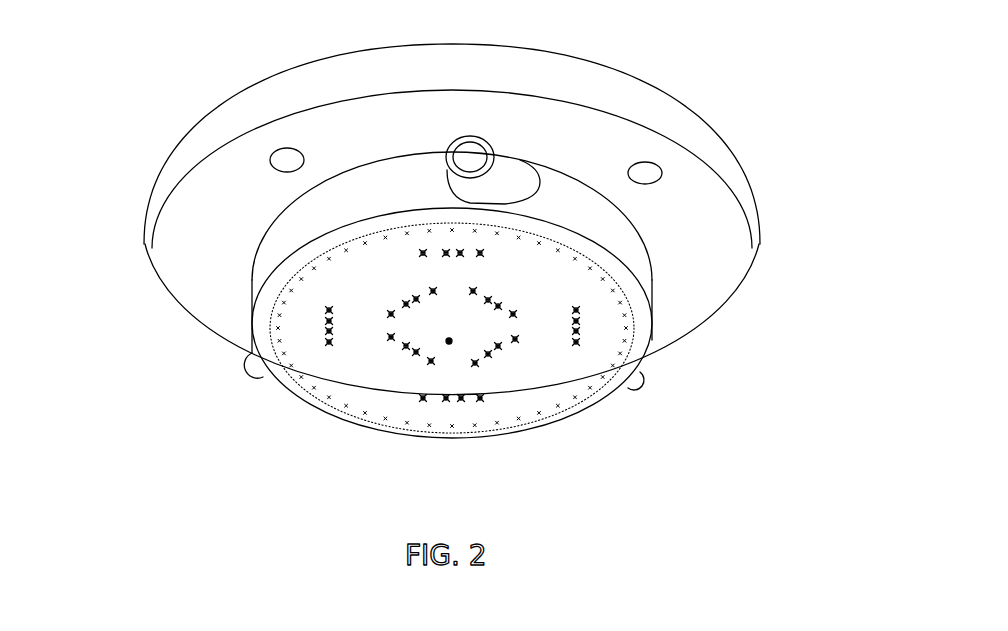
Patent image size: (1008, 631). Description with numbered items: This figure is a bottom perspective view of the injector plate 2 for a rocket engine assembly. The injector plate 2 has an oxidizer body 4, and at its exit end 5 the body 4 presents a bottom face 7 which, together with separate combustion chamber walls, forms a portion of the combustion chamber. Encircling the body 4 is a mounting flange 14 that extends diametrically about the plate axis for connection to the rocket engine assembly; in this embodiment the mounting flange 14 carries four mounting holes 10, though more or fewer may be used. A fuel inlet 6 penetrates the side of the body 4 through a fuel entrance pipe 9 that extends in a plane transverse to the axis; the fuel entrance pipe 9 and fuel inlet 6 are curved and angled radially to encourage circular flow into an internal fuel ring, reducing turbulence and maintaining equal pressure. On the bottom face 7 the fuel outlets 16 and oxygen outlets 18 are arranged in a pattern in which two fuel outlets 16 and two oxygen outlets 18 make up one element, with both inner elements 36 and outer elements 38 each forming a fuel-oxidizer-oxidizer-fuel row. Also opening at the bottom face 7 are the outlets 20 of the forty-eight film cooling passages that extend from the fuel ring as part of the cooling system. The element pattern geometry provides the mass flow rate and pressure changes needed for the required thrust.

The injector plate 2 is at (713, 102).
The oxidizer body 4 is at (297, 227).
The exit end 5 is at (423, 448).
The fuel inlet 6 is at (466, 154).
The bottom face 7 is at (449, 341).
The fuel entrance pipe 9 is at (493, 187).
The mounting holes 10 is at (287, 160).
The mounting flange 14 is at (190, 238).
The fuel outlets 16 is at (330, 340).
The oxygen outlets 18 is at (497, 307).
The outlets 20 is at (557, 248).
The inner elements 36 is at (407, 357).
The outer elements 38 is at (587, 323).